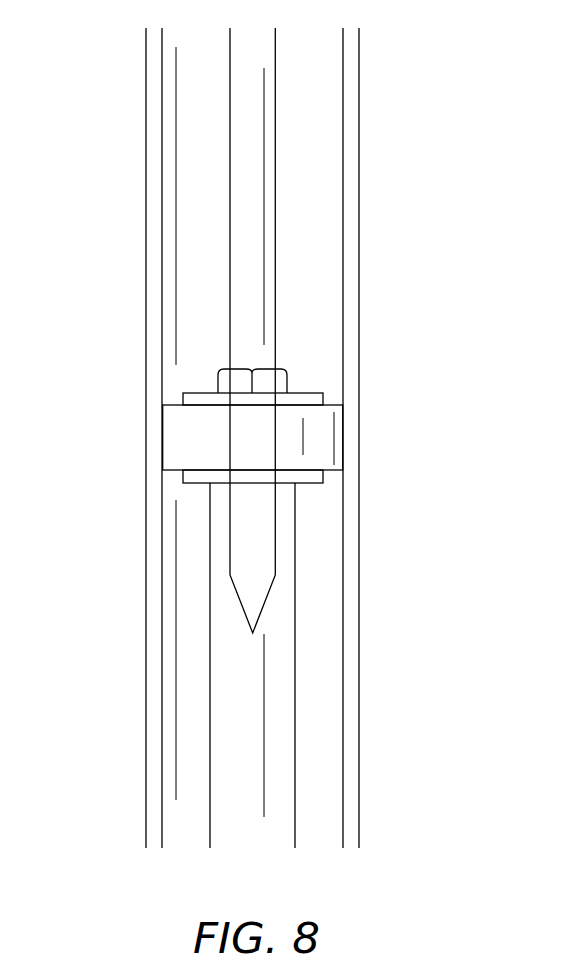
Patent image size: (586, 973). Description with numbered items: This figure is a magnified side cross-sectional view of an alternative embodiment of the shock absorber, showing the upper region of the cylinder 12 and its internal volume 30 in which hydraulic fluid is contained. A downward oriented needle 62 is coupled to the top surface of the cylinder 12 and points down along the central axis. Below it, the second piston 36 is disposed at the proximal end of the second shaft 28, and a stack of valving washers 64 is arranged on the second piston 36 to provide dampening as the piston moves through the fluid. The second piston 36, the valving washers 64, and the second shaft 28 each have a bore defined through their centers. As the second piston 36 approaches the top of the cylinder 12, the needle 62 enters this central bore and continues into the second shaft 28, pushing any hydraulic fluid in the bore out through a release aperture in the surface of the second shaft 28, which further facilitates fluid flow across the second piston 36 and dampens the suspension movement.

The cylinder 12 is at (353, 620).
The second shaft 28 is at (262, 712).
The internal volume 30 is at (182, 677).
The second piston 36 is at (320, 429).
The needle 62 is at (257, 179).
The valving washers 64 is at (193, 478).